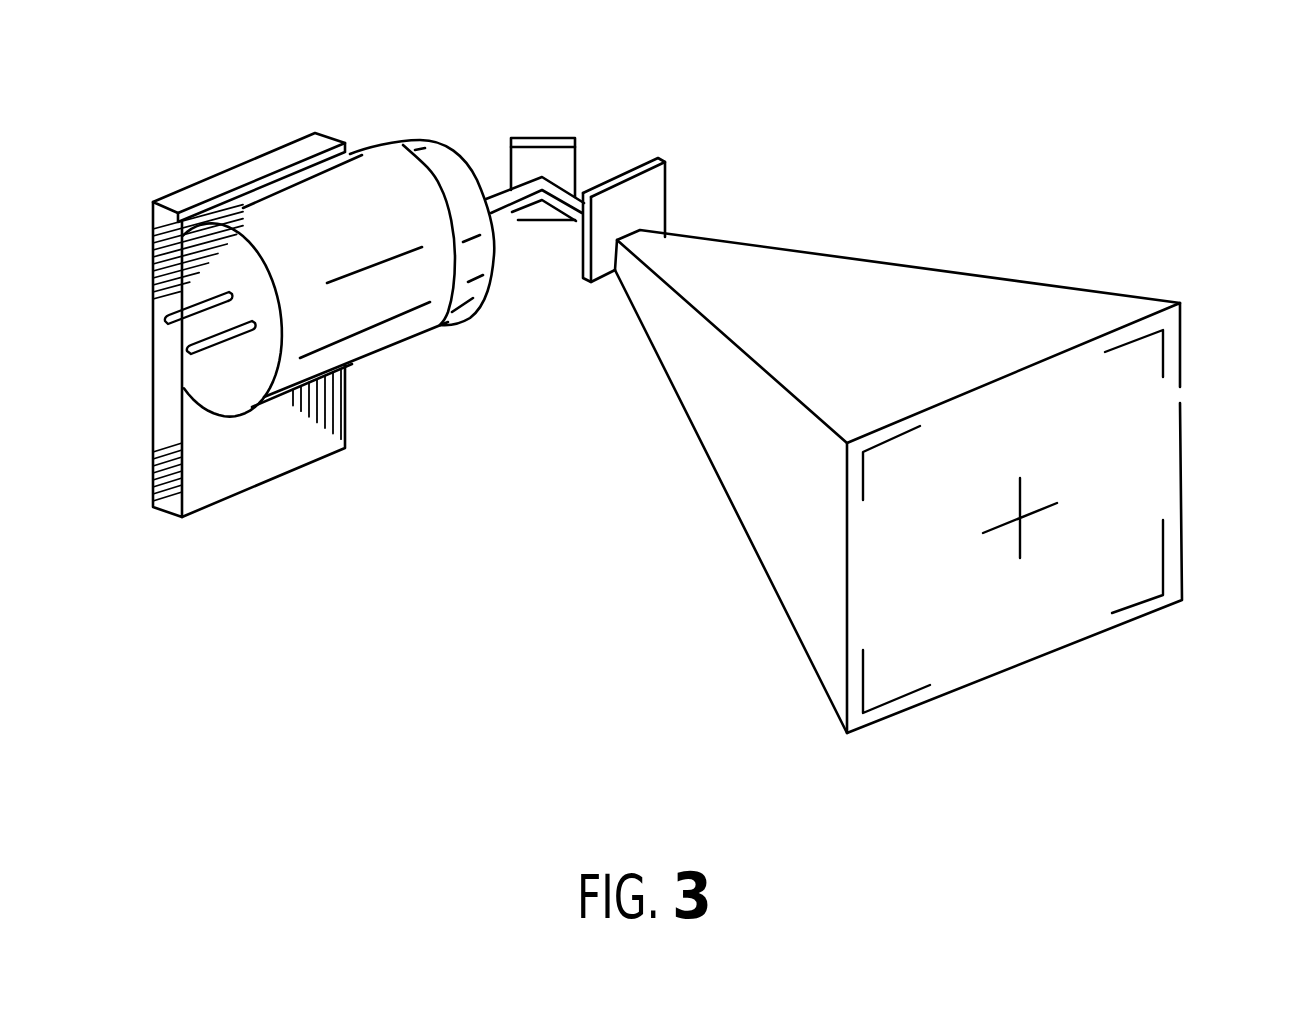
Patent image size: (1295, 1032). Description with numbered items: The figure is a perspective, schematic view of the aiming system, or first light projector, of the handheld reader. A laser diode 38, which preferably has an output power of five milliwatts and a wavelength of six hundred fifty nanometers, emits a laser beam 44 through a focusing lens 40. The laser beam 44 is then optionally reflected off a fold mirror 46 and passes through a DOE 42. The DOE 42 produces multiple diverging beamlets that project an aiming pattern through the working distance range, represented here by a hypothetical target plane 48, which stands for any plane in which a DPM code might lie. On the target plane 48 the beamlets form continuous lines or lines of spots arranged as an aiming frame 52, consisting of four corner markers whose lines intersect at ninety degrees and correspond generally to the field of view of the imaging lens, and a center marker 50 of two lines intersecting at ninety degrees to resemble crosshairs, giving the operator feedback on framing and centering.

The laser diode 38 is at (417, 337).
The focusing lens 40 is at (411, 140).
The DOE 42 is at (646, 160).
The laser beam 44 is at (512, 213).
The fold mirror 46 is at (548, 137).
The hypothetical target plane 48 is at (1003, 673).
The center marker 50 is at (1047, 510).
The aiming frame 52 is at (1165, 353).